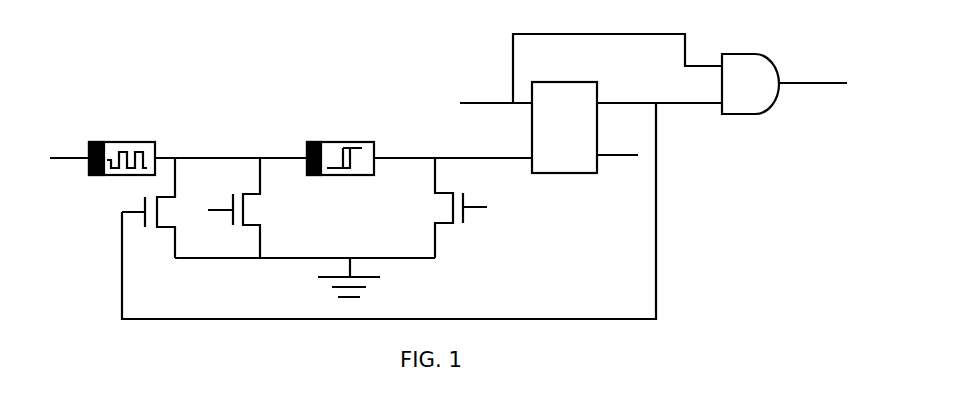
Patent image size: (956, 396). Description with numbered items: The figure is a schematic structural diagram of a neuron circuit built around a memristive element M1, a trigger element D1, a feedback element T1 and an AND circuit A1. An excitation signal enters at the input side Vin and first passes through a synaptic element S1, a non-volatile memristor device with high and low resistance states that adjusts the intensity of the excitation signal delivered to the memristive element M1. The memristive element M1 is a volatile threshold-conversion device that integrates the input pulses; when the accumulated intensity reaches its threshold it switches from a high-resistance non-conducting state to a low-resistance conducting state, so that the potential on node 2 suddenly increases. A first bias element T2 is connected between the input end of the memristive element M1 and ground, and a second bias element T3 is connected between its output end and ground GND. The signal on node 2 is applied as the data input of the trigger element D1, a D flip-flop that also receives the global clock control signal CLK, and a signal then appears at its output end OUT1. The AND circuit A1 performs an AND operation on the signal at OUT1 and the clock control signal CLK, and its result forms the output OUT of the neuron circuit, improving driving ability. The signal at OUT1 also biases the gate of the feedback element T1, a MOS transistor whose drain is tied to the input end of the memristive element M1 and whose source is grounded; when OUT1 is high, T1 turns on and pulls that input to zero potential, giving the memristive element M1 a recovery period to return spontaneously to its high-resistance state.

The synaptic element S1 is at (122, 149).
The memristive element M1 is at (340, 146).
The node 2 is at (466, 146).
The feedback element T1 is at (154, 208).
The first bias element T2 is at (242, 208).
The second bias element T3 is at (453, 208).
The trigger element D1 is at (585, 127).
The AND circuit A1 is at (750, 84).
The input voltage Vin is at (69, 144).
The clock control signal CLK is at (583, 68).
The output end of the trigger element OUT1 is at (659, 91).
The output OUT is at (813, 70).
The ground GND is at (359, 281).